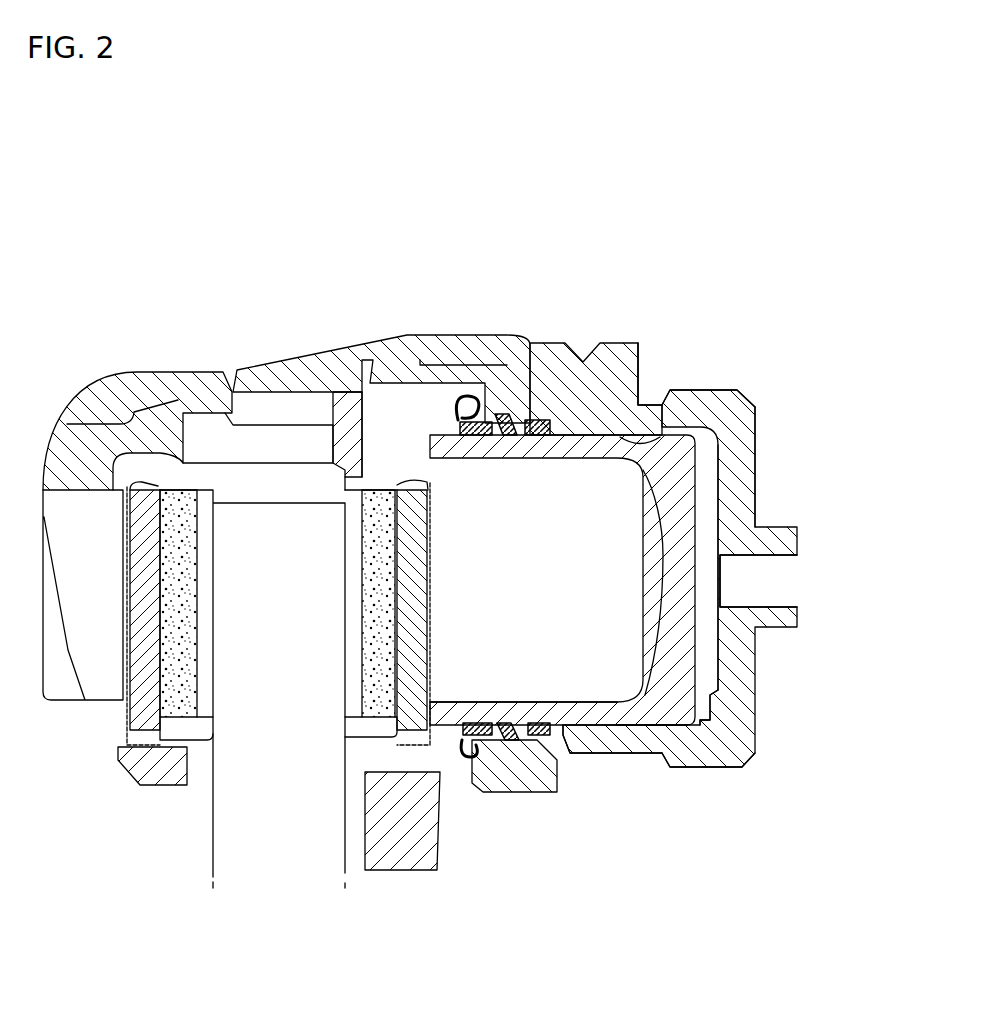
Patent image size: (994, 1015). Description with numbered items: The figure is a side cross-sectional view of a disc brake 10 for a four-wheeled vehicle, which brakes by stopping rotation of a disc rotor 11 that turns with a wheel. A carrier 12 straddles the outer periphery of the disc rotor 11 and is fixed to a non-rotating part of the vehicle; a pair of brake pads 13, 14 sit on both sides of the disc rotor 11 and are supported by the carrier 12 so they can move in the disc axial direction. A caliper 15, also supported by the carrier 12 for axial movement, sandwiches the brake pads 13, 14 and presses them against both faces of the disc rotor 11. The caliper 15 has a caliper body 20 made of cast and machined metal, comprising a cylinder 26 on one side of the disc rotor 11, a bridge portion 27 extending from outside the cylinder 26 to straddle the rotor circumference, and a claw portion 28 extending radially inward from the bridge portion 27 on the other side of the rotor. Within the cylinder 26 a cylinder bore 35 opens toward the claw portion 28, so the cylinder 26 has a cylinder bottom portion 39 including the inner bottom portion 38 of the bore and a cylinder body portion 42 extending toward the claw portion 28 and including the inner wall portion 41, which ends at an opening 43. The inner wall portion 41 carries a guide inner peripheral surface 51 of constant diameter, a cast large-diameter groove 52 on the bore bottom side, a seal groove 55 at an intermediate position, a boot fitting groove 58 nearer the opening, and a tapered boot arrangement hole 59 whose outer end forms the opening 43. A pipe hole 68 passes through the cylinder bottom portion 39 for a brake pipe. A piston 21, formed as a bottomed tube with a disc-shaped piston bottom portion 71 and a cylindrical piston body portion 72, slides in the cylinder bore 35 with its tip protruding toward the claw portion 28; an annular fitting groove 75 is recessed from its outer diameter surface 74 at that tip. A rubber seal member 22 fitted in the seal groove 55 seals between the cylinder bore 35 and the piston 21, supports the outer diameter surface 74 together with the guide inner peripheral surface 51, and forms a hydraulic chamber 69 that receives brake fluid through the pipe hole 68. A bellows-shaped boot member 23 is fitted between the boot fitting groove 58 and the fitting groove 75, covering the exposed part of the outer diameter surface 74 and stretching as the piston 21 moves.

The disc brake 10 is at (768, 185).
The disc rotor 11 is at (213, 855).
The carrier 12 is at (378, 885).
The brake pad 13 is at (379, 478).
The brake pad 14 is at (176, 478).
The caliper 15 is at (92, 360).
The caliper body 20 is at (728, 388).
The piston 21 is at (428, 420).
The seal member 22 is at (544, 425).
The boot member 23 is at (458, 438).
The cylinder 26 is at (693, 766).
The bridge portion 27 is at (279, 402).
The claw portion 28 is at (91, 667).
The cylinder bore 35 is at (646, 712).
The inner bottom portion 38 is at (718, 492).
The cylinder bottom portion 39 is at (740, 465).
The inner wall portion 41 is at (616, 712).
The cylinder body portion 42 is at (622, 744).
The opening 43 is at (472, 759).
The guide inner peripheral surface 51 is at (656, 438).
The large-diameter groove 52 is at (740, 436).
The seal groove 55 is at (556, 720).
The boot fitting groove 58 is at (524, 745).
The boot arrangement hole 59 is at (470, 731).
The pipe hole 68 is at (752, 558).
The hydraulic chamber 69 is at (712, 680).
The piston bottom portion 71 is at (676, 548).
The piston body portion 72 is at (568, 442).
The outer diameter surface 74 is at (598, 432).
The fitting groove 75 is at (484, 430).